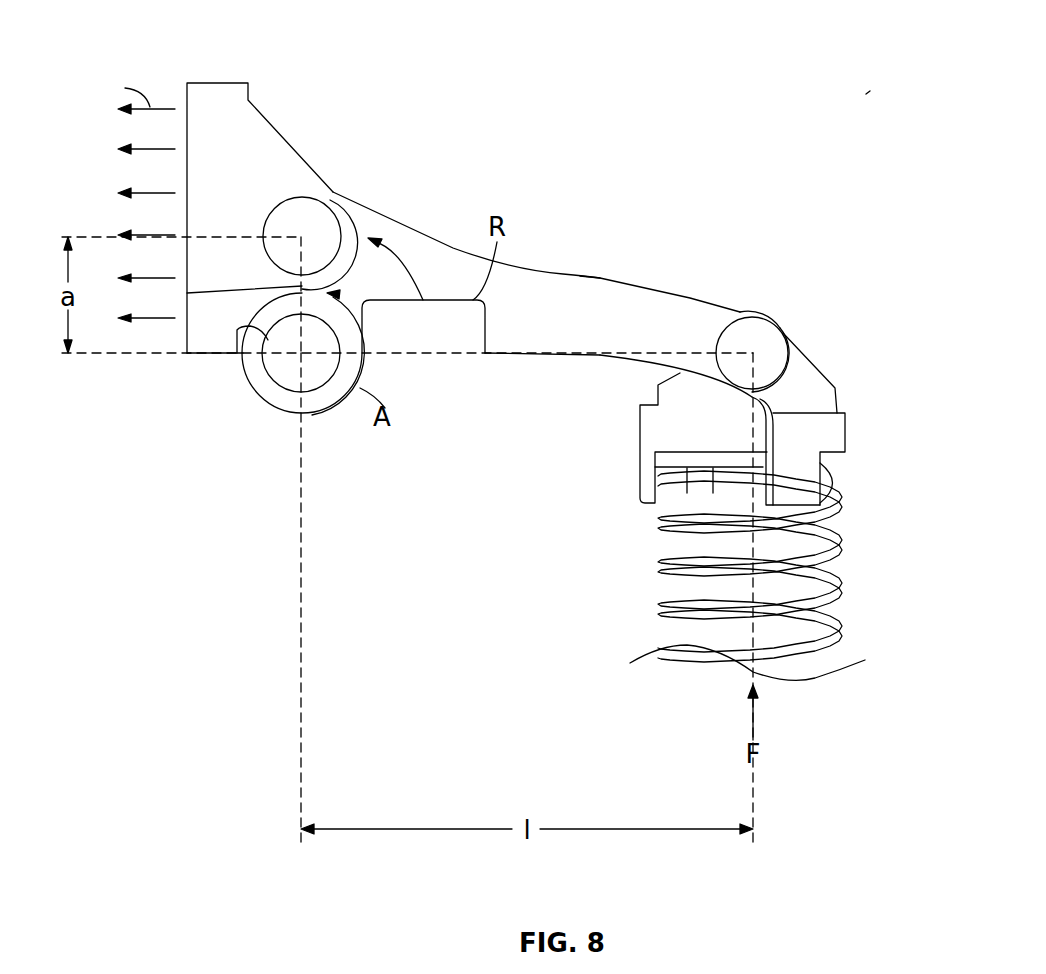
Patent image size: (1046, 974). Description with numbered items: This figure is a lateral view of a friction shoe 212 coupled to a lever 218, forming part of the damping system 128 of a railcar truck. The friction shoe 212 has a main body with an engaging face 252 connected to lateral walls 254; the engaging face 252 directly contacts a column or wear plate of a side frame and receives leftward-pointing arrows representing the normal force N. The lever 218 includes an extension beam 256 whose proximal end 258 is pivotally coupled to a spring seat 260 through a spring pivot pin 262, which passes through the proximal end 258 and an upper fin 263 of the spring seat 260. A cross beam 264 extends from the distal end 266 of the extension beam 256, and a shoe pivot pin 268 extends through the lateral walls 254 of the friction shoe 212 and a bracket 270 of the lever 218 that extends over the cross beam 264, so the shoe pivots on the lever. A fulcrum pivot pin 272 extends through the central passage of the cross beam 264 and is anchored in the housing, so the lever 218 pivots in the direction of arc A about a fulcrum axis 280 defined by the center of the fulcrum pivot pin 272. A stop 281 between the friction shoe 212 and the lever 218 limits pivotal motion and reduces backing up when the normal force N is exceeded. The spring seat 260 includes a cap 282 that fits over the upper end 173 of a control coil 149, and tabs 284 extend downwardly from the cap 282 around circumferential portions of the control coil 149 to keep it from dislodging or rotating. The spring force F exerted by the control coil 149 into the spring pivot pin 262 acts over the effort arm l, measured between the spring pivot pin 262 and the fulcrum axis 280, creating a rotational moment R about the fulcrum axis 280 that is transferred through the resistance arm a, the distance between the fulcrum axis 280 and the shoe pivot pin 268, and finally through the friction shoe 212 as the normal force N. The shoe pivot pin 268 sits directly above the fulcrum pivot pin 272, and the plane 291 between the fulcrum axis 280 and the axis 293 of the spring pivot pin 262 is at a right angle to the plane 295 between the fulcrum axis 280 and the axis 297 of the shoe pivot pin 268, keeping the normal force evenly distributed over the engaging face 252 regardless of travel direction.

The damping system 128 is at (875, 80).
The friction shoe 212 is at (177, 49).
The engaging face 252 is at (187, 183).
The lateral walls 254 is at (287, 177).
The extension beam 256 is at (628, 283).
The proximal end 258 is at (697, 318).
The spring seat 260 is at (836, 368).
The spring pivot pin 262 is at (773, 316).
The upper fin 263 is at (807, 356).
The cross beam 264 is at (278, 388).
The distal end 266 is at (383, 355).
The shoe pivot pin 268 is at (317, 230).
The bracket 270 is at (380, 227).
The fulcrum pivot pin 272 is at (312, 372).
The fulcrum axis 280 is at (297, 356).
The stop 281 is at (237, 325).
The cap 282 is at (837, 437).
The tabs 284 is at (640, 477).
The plane 291 is at (640, 337).
The axis 293 is at (752, 353).
The plane 295 is at (187, 293).
The axis 297 is at (301, 237).
The lever 218 is at (600, 248).
The upper end 173 is at (691, 470).
The control coil 149 is at (847, 563).